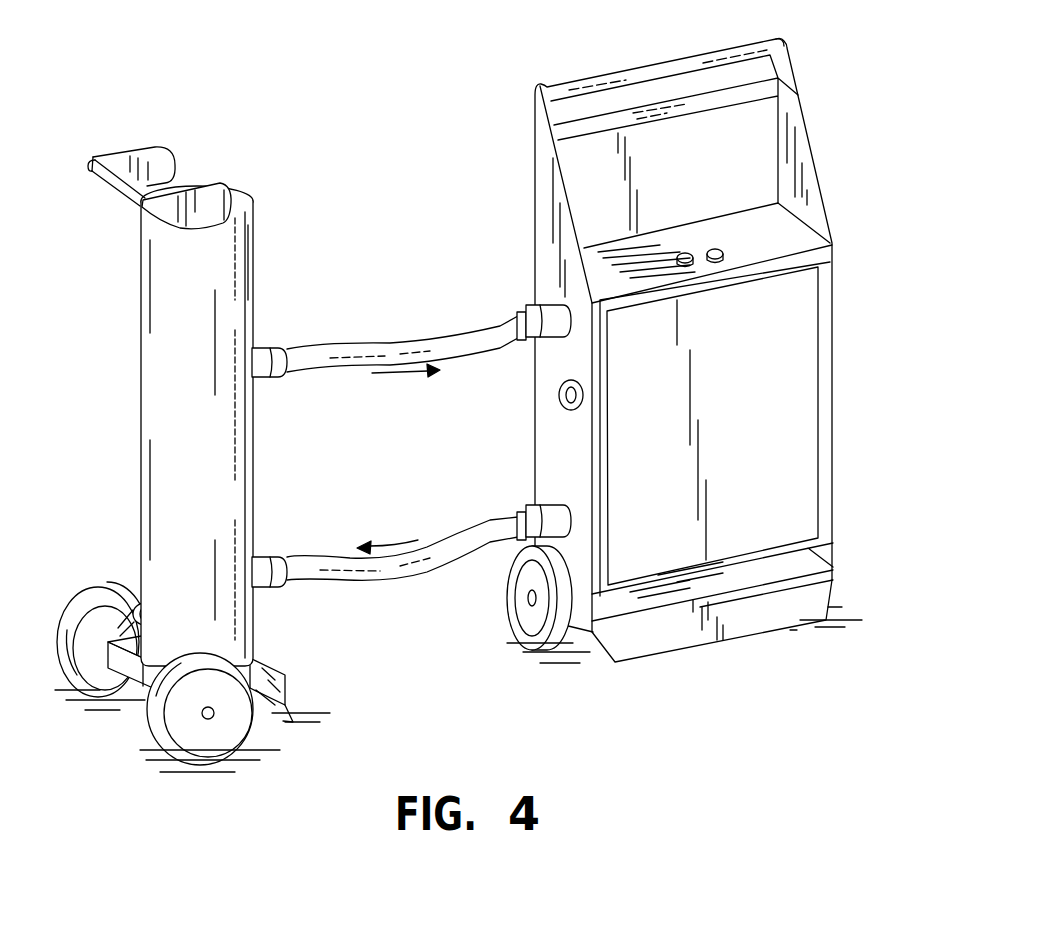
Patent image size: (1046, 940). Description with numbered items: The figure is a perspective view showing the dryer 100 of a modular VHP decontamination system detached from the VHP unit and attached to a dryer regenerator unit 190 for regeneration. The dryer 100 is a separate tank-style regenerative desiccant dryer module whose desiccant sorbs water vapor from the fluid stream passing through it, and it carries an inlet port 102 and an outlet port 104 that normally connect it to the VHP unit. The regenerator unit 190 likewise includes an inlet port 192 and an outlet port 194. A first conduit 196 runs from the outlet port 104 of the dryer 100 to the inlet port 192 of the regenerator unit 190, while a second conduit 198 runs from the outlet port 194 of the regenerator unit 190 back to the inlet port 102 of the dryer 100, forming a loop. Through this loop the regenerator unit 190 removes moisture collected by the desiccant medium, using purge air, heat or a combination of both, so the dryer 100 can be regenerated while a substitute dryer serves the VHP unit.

The dryer 100 is at (142, 333).
The inlet port 102 is at (263, 568).
The outlet port 104 is at (260, 352).
The dryer regenerator unit 190 is at (835, 341).
The inlet port 192 is at (540, 305).
The outlet port 194 is at (552, 512).
The first conduit 196 is at (410, 338).
The second conduit 198 is at (450, 542).